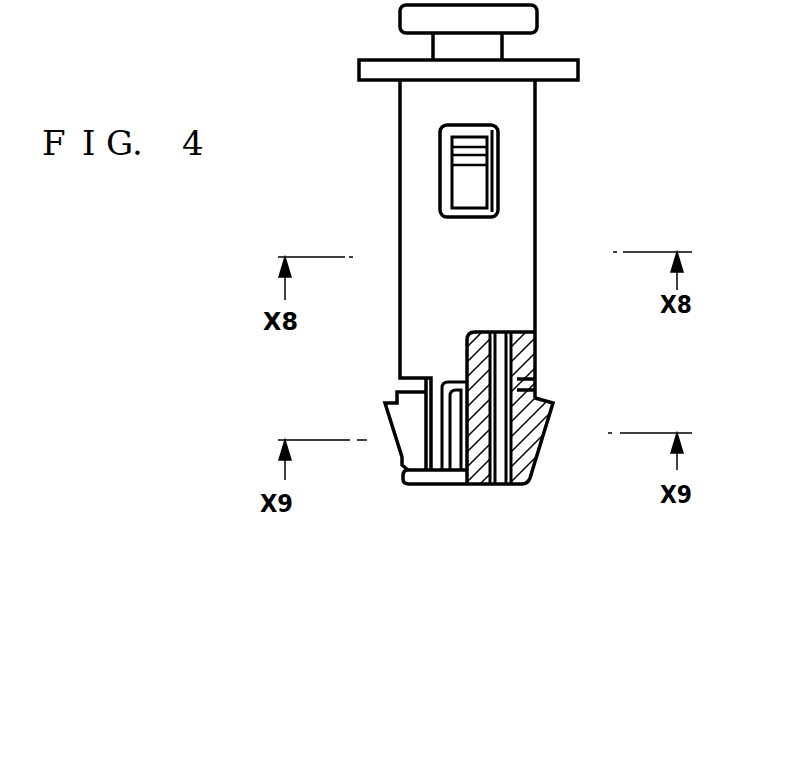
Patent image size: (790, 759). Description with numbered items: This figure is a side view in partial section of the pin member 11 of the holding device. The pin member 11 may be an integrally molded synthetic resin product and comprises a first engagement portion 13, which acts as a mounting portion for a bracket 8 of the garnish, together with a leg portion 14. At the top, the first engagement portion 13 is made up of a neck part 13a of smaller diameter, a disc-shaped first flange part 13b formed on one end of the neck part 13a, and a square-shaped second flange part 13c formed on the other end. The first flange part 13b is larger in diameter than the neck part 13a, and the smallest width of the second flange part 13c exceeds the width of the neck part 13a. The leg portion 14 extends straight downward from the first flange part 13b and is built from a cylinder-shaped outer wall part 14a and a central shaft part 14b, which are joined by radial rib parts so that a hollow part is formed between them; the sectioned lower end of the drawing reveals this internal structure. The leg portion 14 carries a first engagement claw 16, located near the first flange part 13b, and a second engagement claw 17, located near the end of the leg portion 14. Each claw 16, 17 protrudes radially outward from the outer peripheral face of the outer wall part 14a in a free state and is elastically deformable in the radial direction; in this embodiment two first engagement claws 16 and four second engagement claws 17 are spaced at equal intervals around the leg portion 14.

The pin member 11 is at (604, 95).
The first engagement portion 13 is at (574, 28).
The neck part 13a is at (452, 50).
The first flange part 13b is at (377, 72).
The second flange part 13c is at (413, 22).
The leg portion 14 is at (464, 300).
The outer wall part 14a is at (515, 200).
The central shaft part 14b is at (477, 472).
The first engagement claw 16 is at (490, 153).
The second engagement claw 17 is at (460, 420).
The bracket 8 is at (550, 450).